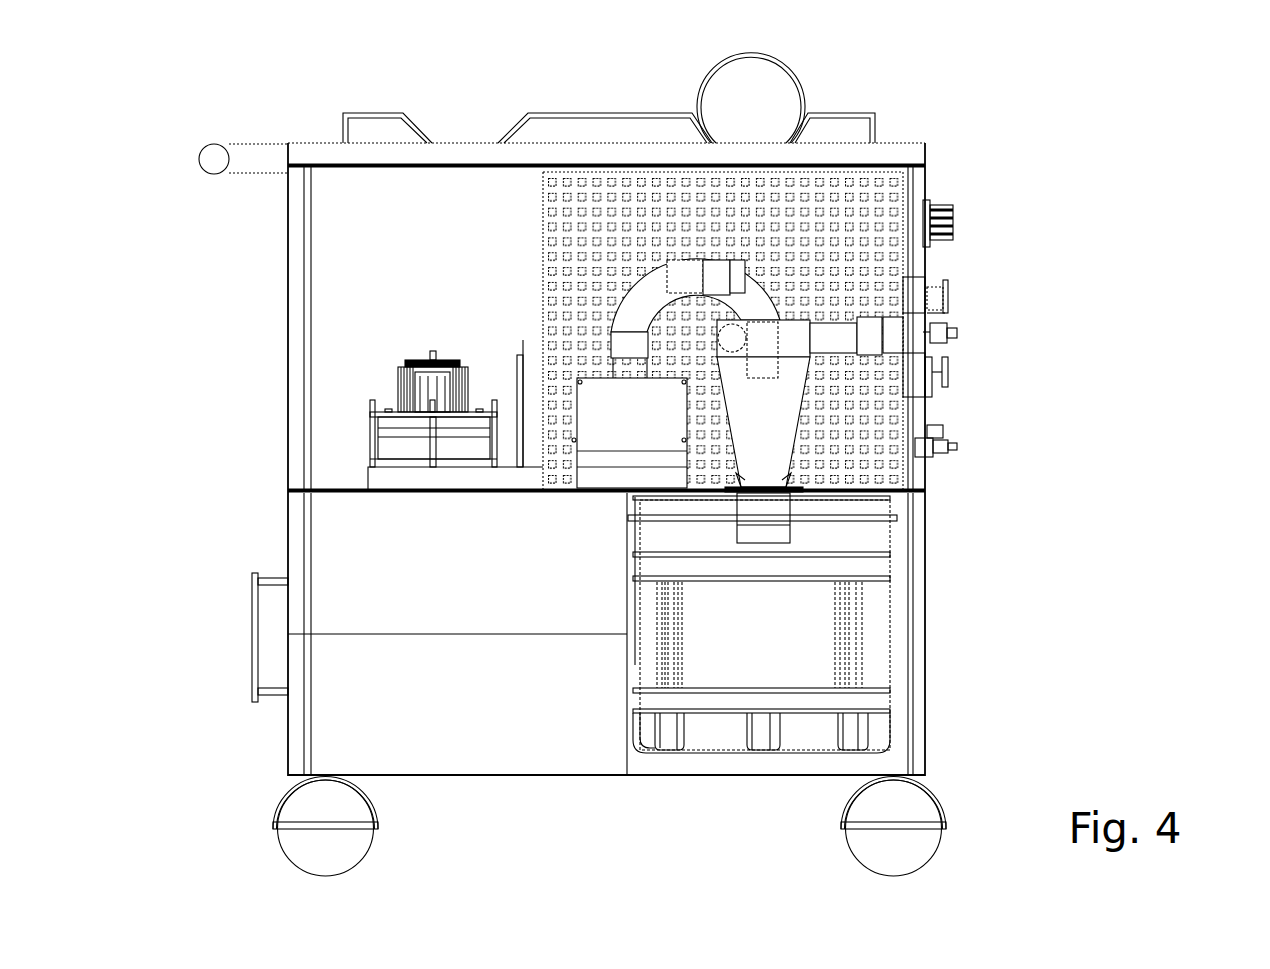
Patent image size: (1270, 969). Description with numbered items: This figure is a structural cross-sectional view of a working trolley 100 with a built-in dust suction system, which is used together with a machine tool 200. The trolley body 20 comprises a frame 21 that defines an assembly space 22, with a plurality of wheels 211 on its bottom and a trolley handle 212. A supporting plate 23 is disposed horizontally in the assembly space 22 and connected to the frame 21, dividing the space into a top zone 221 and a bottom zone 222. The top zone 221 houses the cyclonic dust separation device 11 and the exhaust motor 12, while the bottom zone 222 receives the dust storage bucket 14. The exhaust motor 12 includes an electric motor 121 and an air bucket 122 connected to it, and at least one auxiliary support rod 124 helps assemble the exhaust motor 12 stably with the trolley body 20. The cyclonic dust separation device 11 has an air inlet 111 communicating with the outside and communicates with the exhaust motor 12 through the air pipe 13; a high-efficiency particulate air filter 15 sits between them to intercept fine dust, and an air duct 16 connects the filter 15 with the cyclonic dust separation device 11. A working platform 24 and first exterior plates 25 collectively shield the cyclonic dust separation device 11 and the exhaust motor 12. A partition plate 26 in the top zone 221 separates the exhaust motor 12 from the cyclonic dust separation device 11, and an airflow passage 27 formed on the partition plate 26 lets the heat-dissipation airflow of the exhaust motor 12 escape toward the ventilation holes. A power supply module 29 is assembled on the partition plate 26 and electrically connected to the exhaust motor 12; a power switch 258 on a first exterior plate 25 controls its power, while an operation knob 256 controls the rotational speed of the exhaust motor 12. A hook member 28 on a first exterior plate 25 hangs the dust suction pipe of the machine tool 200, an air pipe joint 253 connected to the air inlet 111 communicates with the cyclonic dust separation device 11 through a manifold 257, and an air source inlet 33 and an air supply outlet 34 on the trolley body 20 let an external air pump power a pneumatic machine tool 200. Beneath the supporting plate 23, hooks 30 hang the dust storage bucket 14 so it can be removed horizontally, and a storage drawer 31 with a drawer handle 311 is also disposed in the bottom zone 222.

The working trolley 100 is at (1216, 69).
The machine tool 200 is at (804, 101).
The trolley body 20 is at (324, 135).
The frame 21 is at (418, 135).
The hook member 28 is at (609, 113).
The working platform 24 is at (477, 164).
The partition plate 26 is at (556, 196).
The air duct 16 is at (688, 270).
The trolley handle 212 is at (199, 159).
The first exterior plates 25 is at (332, 220).
The exhaust motor 12 is at (191, 285).
The electric motor 121 is at (398, 377).
The air bucket 122 is at (387, 432).
The auxiliary support rod 124 is at (373, 443).
The supporting plate 23 is at (347, 491).
The storage drawer 31 is at (336, 543).
The drawer handle 311 is at (250, 625).
The wheels 211 is at (290, 843).
The air pipe 13 is at (407, 495).
The power supply module 29 is at (517, 427).
The airflow passage 27 is at (549, 470).
The high-efficiency particulate air filter 15 is at (642, 423).
The cyclonic dust separation device 11 is at (787, 408).
The air inlet 111 is at (910, 332).
The hooks 30 is at (767, 533).
The dust storage bucket 14 is at (817, 660).
The assembly space 22 is at (1080, 490).
The top zone 221 is at (886, 471).
The bottom zone 222 is at (906, 642).
The air source inlet 33 is at (957, 446).
The air supply outlet 34 is at (948, 335).
The manifold 257 is at (917, 380).
The air pipe joint 253 is at (943, 307).
The power switch 258 is at (927, 290).
The operation knob 256 is at (955, 222).